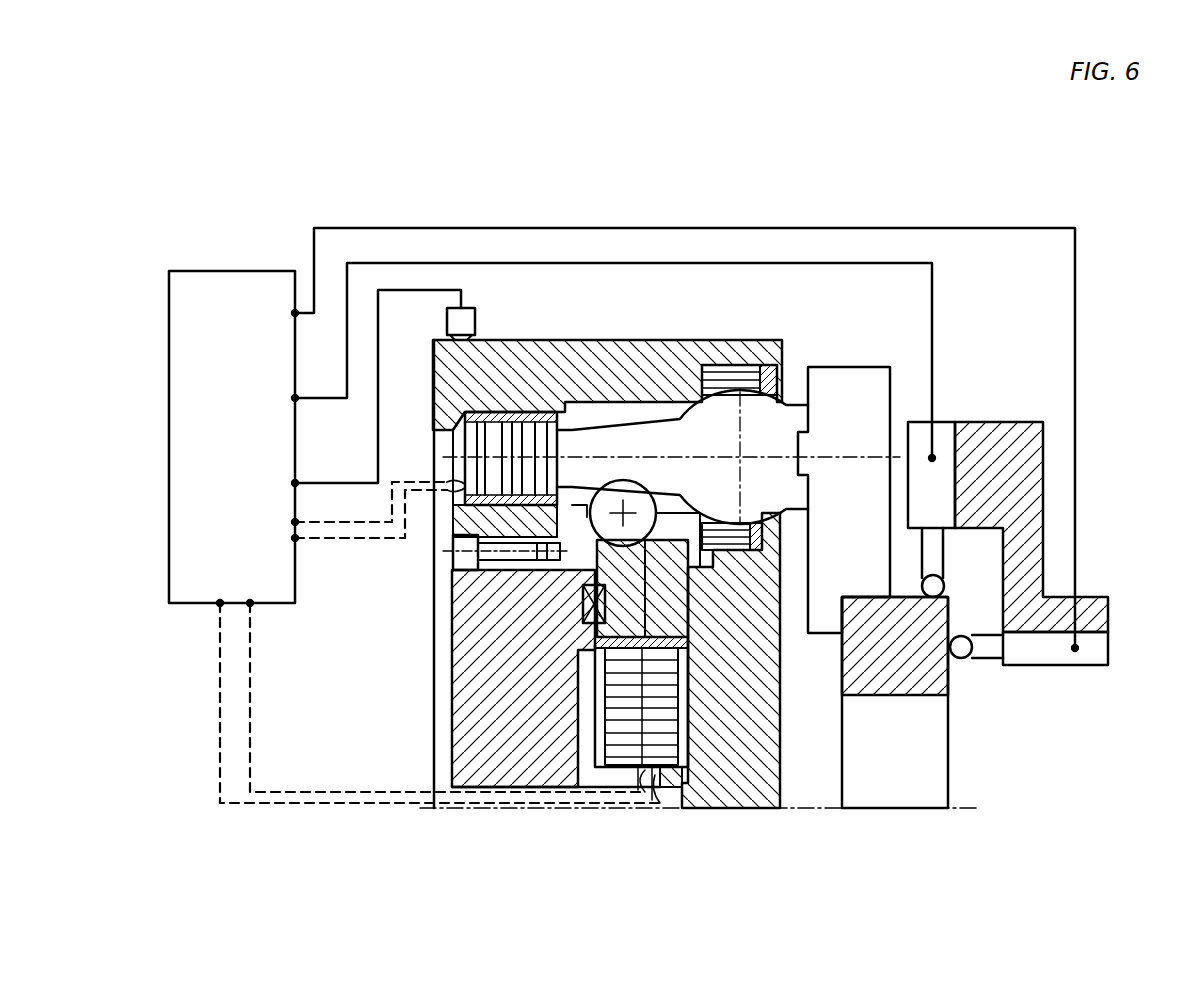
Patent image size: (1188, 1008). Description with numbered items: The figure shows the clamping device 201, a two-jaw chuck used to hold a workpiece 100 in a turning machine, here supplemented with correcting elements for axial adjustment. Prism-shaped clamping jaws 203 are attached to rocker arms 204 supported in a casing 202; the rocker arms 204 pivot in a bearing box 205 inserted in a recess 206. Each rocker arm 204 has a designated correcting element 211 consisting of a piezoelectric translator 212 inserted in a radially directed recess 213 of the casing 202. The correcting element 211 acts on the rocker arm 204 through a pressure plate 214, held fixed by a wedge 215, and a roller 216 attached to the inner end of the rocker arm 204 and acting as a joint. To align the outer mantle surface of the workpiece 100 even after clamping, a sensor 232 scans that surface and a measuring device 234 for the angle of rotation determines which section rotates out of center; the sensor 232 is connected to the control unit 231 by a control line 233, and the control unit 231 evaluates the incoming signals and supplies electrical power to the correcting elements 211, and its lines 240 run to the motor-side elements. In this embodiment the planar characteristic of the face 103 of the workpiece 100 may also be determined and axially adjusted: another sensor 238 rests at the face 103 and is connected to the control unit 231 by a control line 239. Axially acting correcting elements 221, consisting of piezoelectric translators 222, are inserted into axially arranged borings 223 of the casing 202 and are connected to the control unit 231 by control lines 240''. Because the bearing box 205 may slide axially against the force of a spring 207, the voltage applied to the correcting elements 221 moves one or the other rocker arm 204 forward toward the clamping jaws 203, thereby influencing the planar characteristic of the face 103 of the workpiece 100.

The workpiece 100 is at (915, 673).
The face 103 is at (955, 675).
The clamping device 201 is at (722, 200).
The casing 202 is at (578, 336).
The clamping jaws 203 is at (862, 363).
The rocker arms 204 is at (631, 418).
The bearing box 205 is at (721, 363).
The recess 206 is at (765, 368).
The spring 207 is at (797, 378).
The correcting elements 211 is at (664, 834).
The piezoelectric translator 212 is at (620, 757).
The recesses 213 is at (680, 718).
The pressure plate 214 is at (673, 617).
The wedge 215 is at (595, 533).
The roller 216 is at (613, 523).
The correcting elements 221 is at (457, 426).
The piezoelectric translators 222 is at (493, 447).
The borings 223 is at (462, 410).
The control unit 231 is at (220, 266).
The sensor 232 is at (952, 563).
The control line 233 is at (937, 307).
The measuring device 234 is at (484, 292).
The sensor 238 is at (984, 664).
The control line 239 is at (1080, 452).
The motor lines 240 is at (439, 702).
The control lines 240'' is at (370, 555).